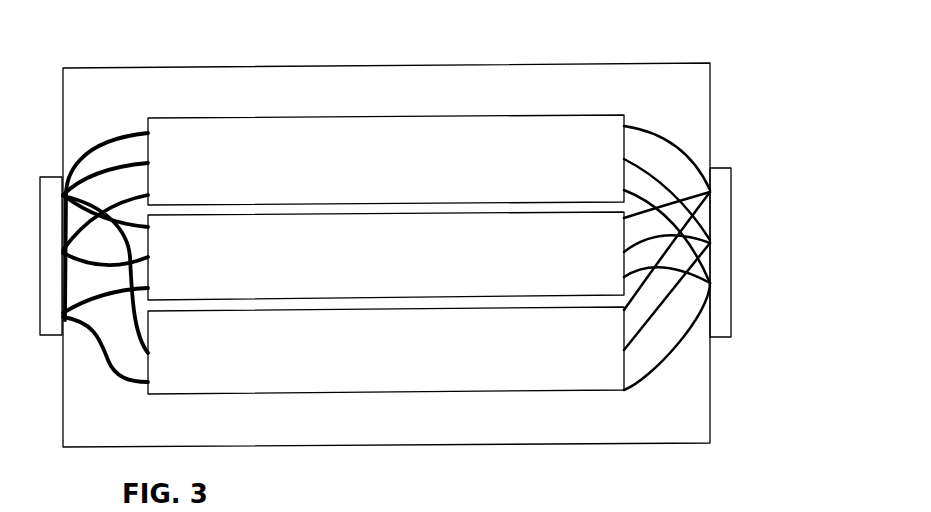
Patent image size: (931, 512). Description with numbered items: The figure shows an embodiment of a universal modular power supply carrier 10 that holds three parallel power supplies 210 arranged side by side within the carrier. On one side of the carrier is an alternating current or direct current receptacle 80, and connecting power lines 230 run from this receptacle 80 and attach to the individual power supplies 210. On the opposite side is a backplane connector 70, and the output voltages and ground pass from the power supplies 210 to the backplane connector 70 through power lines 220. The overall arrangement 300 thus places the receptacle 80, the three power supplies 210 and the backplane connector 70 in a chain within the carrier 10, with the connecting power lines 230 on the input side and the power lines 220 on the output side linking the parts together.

The electric machine assembly 300 is at (778, 72).
The universal modular power supply carrier 10 is at (150, 68).
The power supplies 210 is at (268, 117).
The backplane connector 70 is at (56, 177).
The alternating current or direct current receptacle 80 is at (713, 168).
The power lines 220 is at (103, 354).
The second end winding 230 is at (667, 370).